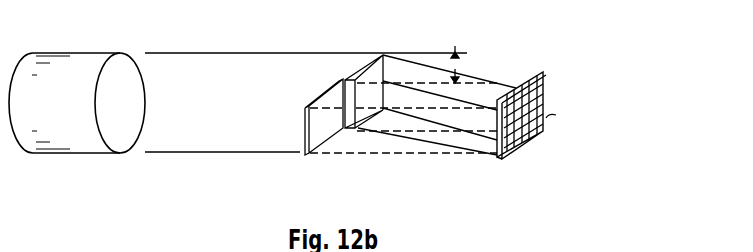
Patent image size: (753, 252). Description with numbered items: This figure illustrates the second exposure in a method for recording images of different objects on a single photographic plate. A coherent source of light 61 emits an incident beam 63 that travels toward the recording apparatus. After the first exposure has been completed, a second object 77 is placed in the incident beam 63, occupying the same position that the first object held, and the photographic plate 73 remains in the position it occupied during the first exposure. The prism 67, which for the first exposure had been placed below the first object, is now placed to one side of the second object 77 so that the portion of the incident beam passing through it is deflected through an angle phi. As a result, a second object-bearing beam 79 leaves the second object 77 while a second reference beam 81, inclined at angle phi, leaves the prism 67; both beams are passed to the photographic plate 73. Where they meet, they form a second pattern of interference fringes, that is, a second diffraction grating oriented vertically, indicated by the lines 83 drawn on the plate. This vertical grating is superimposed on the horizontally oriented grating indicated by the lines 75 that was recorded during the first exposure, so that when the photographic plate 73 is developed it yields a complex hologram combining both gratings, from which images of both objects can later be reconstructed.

The coherent source of light 61 is at (75, 154).
The incident beam 63 is at (192, 153).
The prism 67 is at (378, 95).
The photographic plate 73 is at (607, 113).
The lines indicating horizontally oriented diffraction grating 75 is at (546, 92).
The second object 77 is at (306, 130).
The second object-bearing beam 79 is at (366, 143).
The second reference beam 81 is at (431, 54).
The lines indicating vertically oriented diffraction grating 83 is at (506, 144).